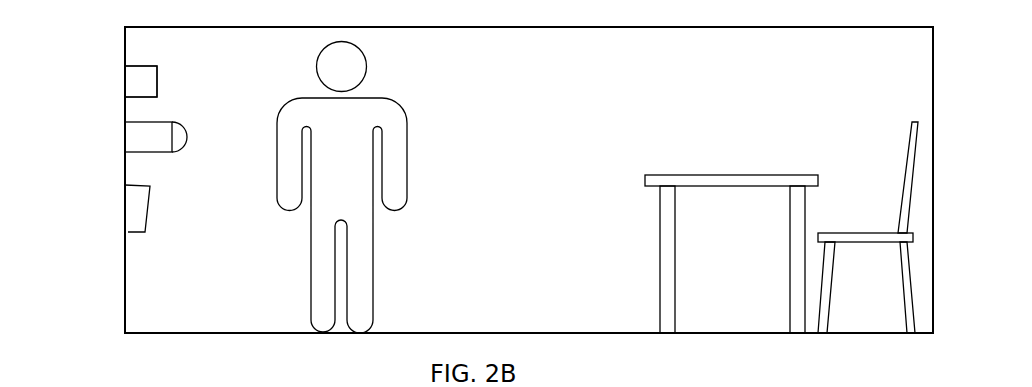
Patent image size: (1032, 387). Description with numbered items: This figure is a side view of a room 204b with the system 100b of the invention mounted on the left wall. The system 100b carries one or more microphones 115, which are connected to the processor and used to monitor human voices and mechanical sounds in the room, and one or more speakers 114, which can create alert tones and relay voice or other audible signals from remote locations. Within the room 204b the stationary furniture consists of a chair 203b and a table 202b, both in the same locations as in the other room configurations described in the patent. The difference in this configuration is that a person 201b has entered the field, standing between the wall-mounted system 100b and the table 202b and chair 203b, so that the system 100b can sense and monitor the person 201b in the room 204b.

The system 100b is at (92, 120).
The microphone 115 is at (136, 74).
The speaker 114 is at (125, 212).
The person 201b is at (290, 110).
The table 202b is at (677, 175).
The chair 203b is at (907, 150).
The room 204b is at (888, 68).